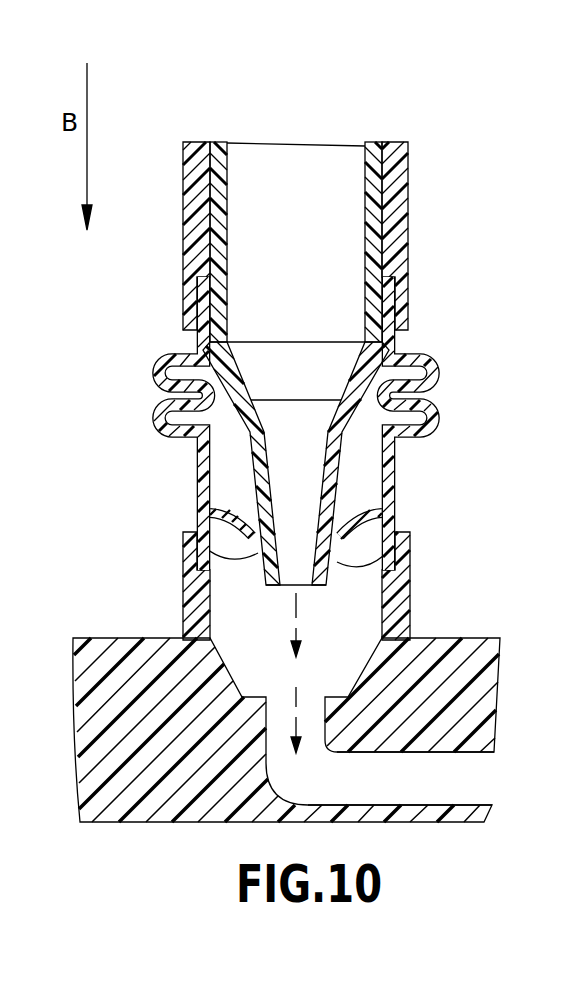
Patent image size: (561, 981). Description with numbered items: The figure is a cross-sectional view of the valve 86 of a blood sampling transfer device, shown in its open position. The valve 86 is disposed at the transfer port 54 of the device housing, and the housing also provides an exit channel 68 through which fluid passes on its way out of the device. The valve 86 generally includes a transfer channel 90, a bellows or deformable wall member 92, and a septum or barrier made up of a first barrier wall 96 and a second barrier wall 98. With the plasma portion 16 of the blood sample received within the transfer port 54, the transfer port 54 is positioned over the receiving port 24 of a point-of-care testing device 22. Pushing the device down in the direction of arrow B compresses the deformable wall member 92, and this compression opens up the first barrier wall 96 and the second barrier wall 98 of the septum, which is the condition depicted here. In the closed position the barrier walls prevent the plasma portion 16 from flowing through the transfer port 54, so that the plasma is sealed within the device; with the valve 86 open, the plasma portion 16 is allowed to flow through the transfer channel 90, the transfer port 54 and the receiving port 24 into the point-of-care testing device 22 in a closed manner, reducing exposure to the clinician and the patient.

The plasma portion 16 is at (298, 620).
The point-of-care testing device 22 is at (112, 638).
The receiving port 24 is at (437, 775).
The transfer port 54 is at (183, 197).
The exit channel 68 is at (296, 172).
The valve 86 is at (135, 390).
The transfer channel 90 is at (345, 463).
The deformable wall member 92 is at (438, 380).
The first barrier wall 96 is at (208, 550).
The second barrier wall 98 is at (392, 552).